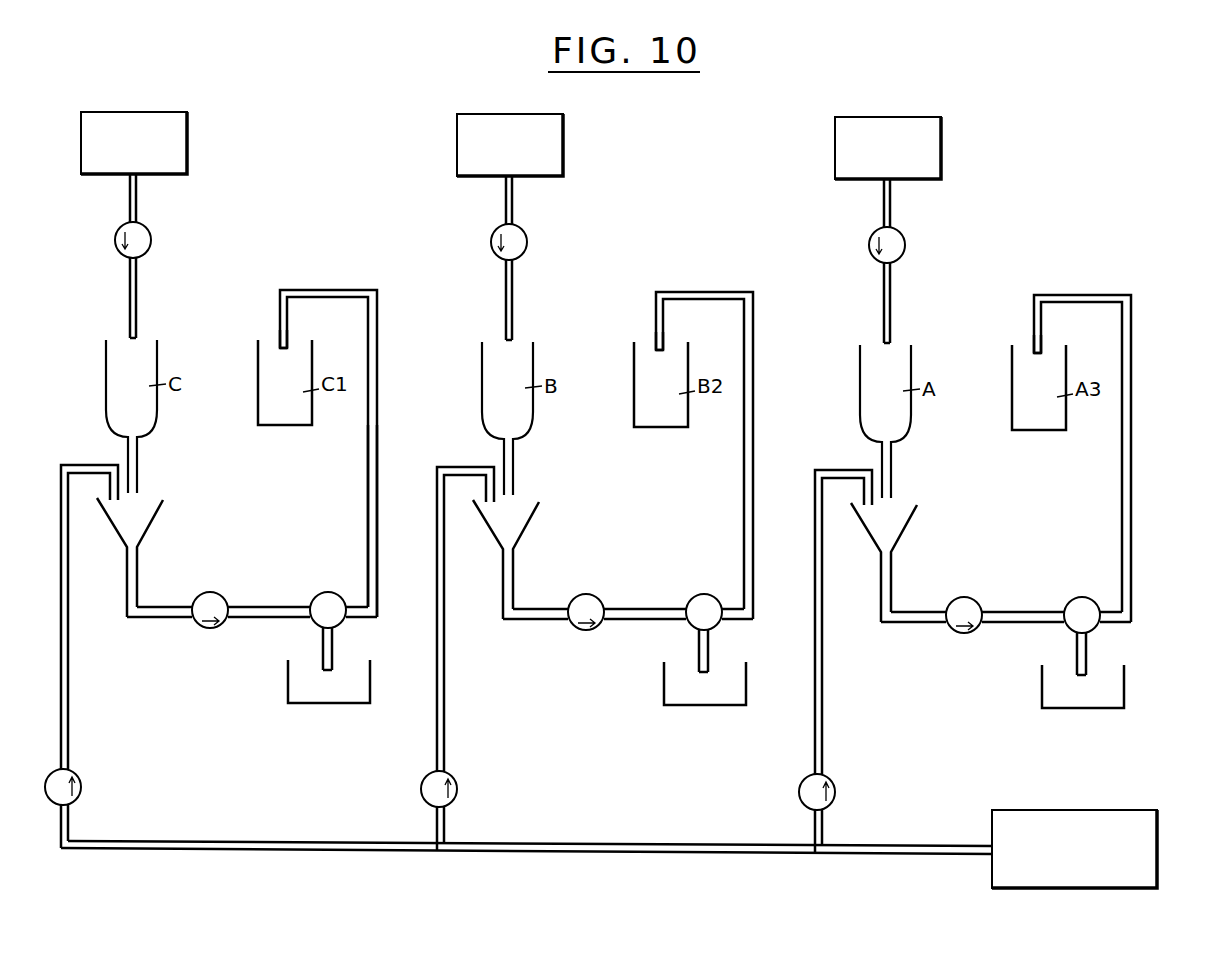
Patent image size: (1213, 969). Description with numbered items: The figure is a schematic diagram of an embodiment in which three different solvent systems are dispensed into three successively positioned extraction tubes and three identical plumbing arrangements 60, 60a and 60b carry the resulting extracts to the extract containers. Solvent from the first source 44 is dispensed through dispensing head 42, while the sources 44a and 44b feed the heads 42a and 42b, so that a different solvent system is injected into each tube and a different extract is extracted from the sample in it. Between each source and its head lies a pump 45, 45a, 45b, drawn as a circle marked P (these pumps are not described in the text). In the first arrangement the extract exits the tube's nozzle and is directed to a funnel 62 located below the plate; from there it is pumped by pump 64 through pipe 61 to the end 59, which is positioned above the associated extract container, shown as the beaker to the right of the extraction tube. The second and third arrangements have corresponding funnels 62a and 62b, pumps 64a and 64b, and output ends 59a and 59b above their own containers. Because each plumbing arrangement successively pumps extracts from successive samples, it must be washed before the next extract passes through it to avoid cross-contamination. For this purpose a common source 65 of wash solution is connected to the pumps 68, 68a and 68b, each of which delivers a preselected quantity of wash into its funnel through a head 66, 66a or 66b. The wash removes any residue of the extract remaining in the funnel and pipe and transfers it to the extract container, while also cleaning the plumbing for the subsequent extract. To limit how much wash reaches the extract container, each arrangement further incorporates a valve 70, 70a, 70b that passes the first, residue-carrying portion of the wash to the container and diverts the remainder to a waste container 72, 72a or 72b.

The solvent system source 44 is at (187, 152).
The solvent system source 44a is at (539, 145).
The solvent system source 44b is at (917, 148).
The pump 45 is at (151, 240).
The pump 45a is at (534, 242).
The pump 45b is at (913, 245).
The dispensing head 42 is at (137, 312).
The dispensing head 42a is at (540, 258).
The dispensing head 42b is at (918, 261).
The end 59 is at (287, 333).
The output end 59a is at (686, 331).
The output end 59b is at (1064, 334).
The plumbing arrangement 60 is at (382, 466).
The plumbing arrangement 60a is at (730, 455).
The plumbing arrangement 60b is at (1108, 458).
The pipe 61 is at (378, 425).
The funnel 62 is at (161, 510).
The funnel 62a is at (534, 553).
The funnel 62b is at (912, 556).
The pump 64 is at (213, 595).
The pump 64a is at (588, 596).
The pump 64b is at (967, 599).
The head 66 is at (105, 465).
The head 66a is at (465, 643).
The head 66b is at (843, 646).
The pump 68 is at (81, 787).
The pump 68a is at (467, 789).
The pump 68b is at (846, 792).
The valve 70 is at (327, 595).
The valve 70a is at (705, 617).
The valve 70b is at (1084, 620).
The waste container 72 is at (352, 705).
The waste container 72a is at (717, 705).
The waste container 72b is at (1096, 708).
The source of wash solution 65 is at (1075, 810).